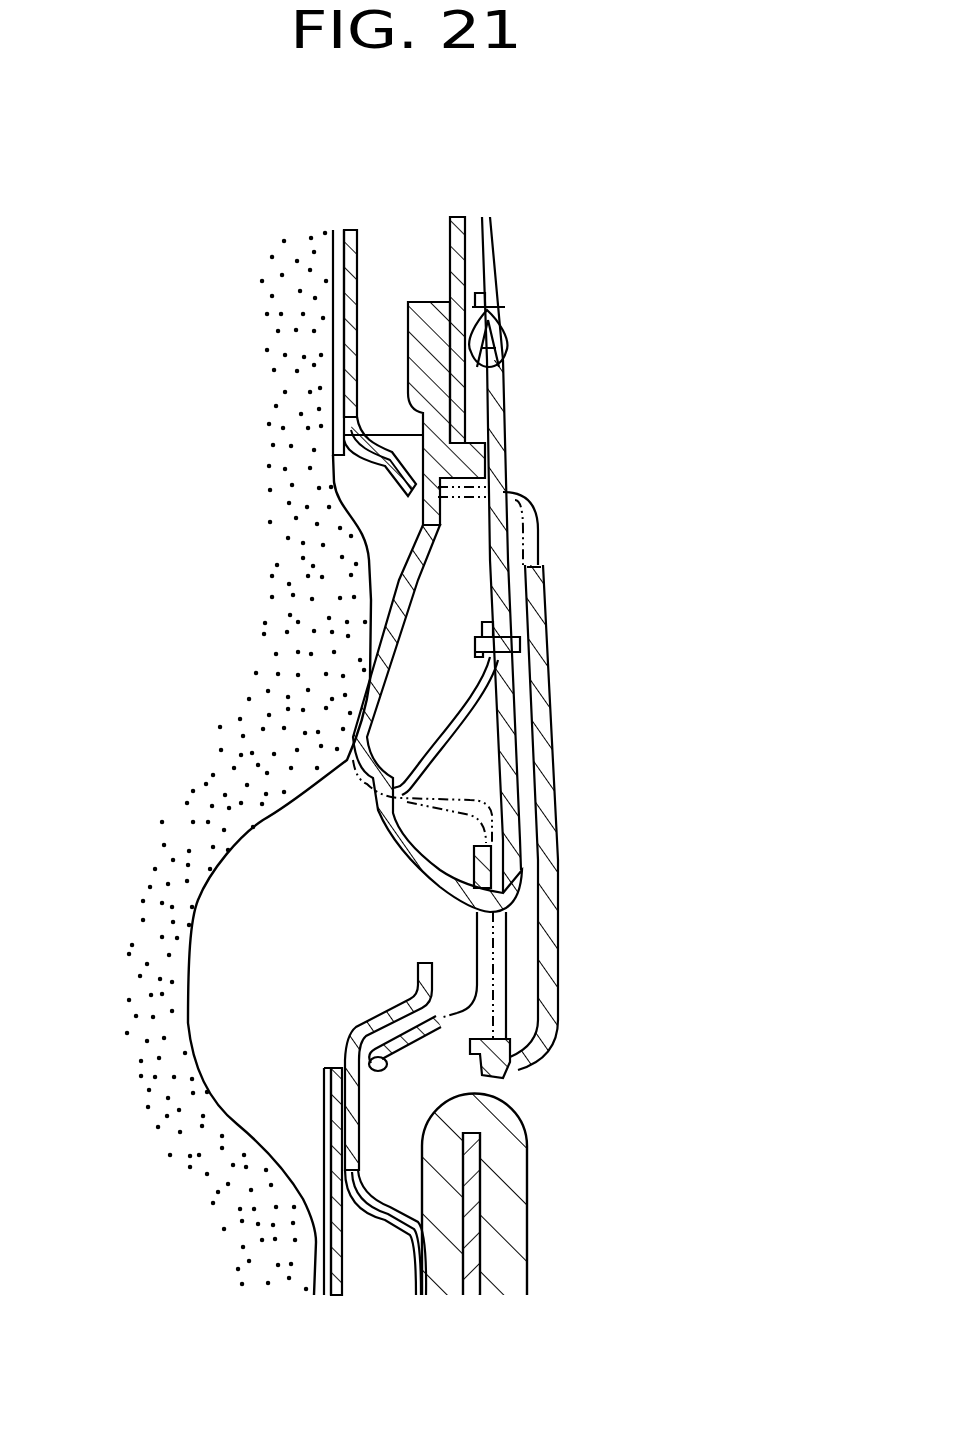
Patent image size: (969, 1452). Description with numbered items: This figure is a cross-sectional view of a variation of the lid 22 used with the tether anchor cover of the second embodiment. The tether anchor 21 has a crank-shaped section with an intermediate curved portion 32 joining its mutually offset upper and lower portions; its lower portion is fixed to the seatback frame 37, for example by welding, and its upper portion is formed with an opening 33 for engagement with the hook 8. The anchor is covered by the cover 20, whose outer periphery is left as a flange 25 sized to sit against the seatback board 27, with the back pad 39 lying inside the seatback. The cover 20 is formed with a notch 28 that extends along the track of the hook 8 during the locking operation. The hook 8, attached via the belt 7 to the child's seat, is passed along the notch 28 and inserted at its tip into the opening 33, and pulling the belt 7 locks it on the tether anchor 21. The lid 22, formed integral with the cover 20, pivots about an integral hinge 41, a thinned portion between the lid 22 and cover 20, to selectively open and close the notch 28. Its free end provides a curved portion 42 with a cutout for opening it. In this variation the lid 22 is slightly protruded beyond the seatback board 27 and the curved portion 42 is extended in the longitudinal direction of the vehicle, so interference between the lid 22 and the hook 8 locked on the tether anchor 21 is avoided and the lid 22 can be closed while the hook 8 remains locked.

The belt 7 is at (497, 262).
The hook 8 is at (505, 465).
The cover 20 is at (375, 562).
The tether anchor 21 is at (448, 863).
The lid 22 is at (552, 698).
The flange 25 is at (333, 434).
The seatback board 27 is at (503, 398).
The notch 28 is at (490, 925).
The intermediate curved portion 32 is at (347, 1050).
The opening 33 is at (486, 948).
The seatback frame 37 is at (312, 331).
The back pad 39 is at (222, 857).
The integral hinge 41 is at (505, 1080).
The curved portion 42 is at (533, 522).